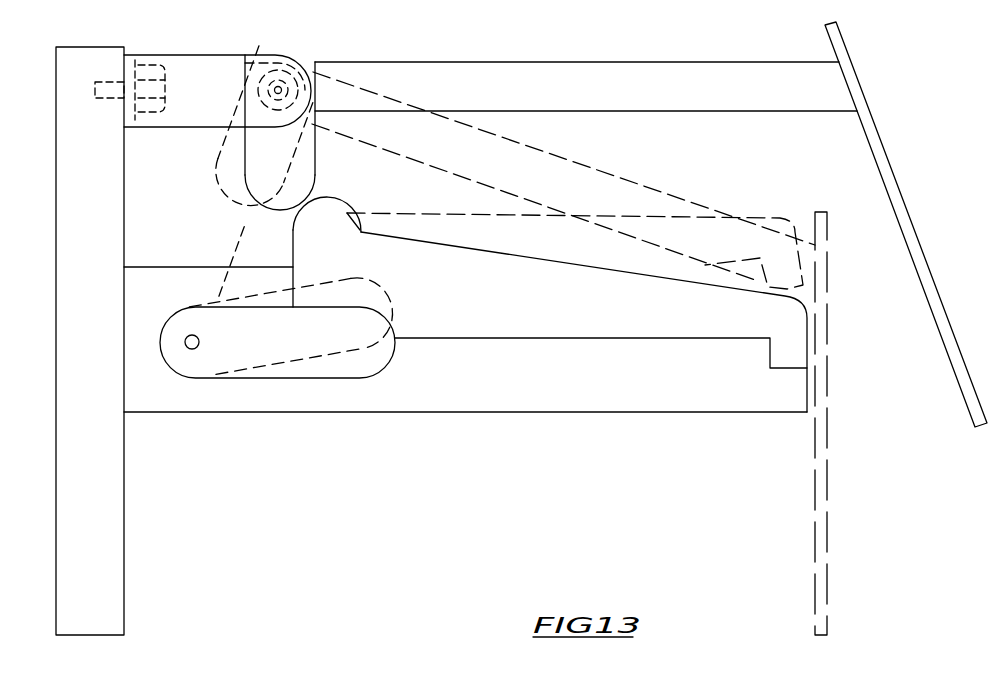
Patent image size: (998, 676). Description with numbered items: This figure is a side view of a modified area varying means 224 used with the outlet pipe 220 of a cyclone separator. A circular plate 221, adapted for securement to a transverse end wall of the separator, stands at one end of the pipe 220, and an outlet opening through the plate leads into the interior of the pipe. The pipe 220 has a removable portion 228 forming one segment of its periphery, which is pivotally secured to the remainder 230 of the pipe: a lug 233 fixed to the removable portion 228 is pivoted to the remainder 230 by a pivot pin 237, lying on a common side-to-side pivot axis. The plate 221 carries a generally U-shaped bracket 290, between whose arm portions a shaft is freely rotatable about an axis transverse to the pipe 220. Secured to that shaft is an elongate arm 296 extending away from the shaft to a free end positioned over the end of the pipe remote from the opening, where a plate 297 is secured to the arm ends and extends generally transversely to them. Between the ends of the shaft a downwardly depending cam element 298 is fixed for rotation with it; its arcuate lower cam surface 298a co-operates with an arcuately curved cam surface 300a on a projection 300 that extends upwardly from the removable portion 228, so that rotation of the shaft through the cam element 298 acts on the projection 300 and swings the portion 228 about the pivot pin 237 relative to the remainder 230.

The circular plate 221 is at (122, 539).
The outlet pipe 220 is at (446, 415).
The pipe remainder 230 is at (673, 398).
The U-shaped bracket 290 is at (197, 63).
The elongate arm 296 is at (656, 62).
The plate 297 is at (918, 245).
The area varying means 224 is at (915, 167).
The cam element 298 is at (252, 145).
The cam surface 298a is at (263, 220).
The projection 300 is at (365, 223).
The cam surface 300a is at (343, 198).
The removable portion 228 is at (490, 255).
The lug 233 is at (337, 362).
The pivot pin 237 is at (200, 342).